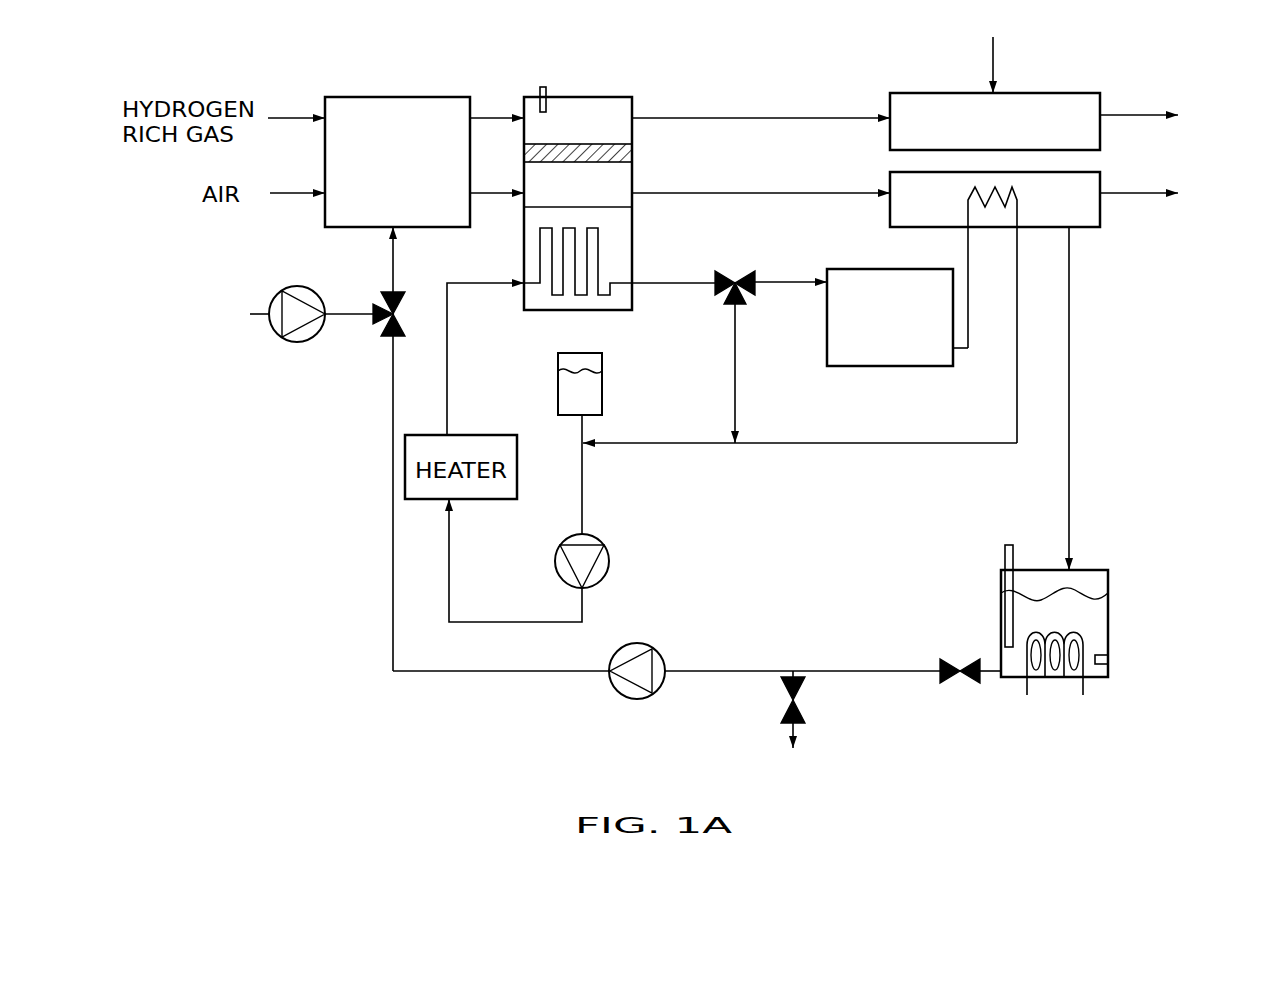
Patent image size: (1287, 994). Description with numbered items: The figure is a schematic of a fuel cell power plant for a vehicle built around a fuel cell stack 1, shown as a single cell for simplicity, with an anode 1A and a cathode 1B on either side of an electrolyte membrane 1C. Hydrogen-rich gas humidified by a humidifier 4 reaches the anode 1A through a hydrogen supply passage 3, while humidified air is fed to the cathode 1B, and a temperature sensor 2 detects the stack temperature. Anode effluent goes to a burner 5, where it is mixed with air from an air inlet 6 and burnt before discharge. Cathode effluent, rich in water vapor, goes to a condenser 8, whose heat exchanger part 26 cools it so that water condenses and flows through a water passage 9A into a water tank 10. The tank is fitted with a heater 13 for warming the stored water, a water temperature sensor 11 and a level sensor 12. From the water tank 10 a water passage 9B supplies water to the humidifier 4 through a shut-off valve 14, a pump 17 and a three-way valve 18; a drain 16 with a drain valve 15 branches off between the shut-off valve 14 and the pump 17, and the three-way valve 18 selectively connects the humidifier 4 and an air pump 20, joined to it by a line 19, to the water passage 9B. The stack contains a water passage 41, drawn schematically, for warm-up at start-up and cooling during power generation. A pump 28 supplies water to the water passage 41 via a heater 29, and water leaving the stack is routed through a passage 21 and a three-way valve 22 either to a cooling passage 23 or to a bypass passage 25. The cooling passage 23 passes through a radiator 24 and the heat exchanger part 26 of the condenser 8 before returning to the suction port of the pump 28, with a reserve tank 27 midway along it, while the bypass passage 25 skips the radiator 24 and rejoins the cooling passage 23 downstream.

The fuel cell stack 1 is at (699, 158).
The anode 1A is at (571, 107).
The cathode 1B is at (612, 196).
The electrolyte membrane 1C is at (632, 152).
The temperature sensor 2 is at (540, 90).
The hydrogen supply passage 3 is at (489, 117).
The humidifier 4 is at (379, 97).
The burner 5 is at (1062, 93).
The air inlet 6 is at (993, 57).
The condenser 8 is at (1083, 215).
The water passage 9A is at (1069, 392).
The water passage 9B is at (745, 671).
The water tank 10 is at (1104, 570).
The water temperature sensor 11 is at (1112, 660).
The level sensor 12 is at (1009, 545).
The heater 13 is at (1058, 680).
The shut-off valve 14 is at (960, 683).
The drain valve 15 is at (808, 700).
The drain 16 is at (788, 727).
The pump 17 is at (645, 645).
The three-way valve 18 is at (380, 322).
The air supply pipe 19 is at (346, 314).
The air pump 20 is at (300, 342).
The passage 21 is at (663, 285).
The three-way valve 22 is at (722, 275).
The cooling passage 23 is at (792, 281).
The radiator 24 is at (905, 366).
The bypass passage 25 is at (736, 352).
The heat exchanger part 26 is at (975, 203).
The reserve tank 27 is at (602, 378).
The pump 28 is at (600, 540).
The heater 29 is at (491, 499).
The water passage 41 is at (538, 262).